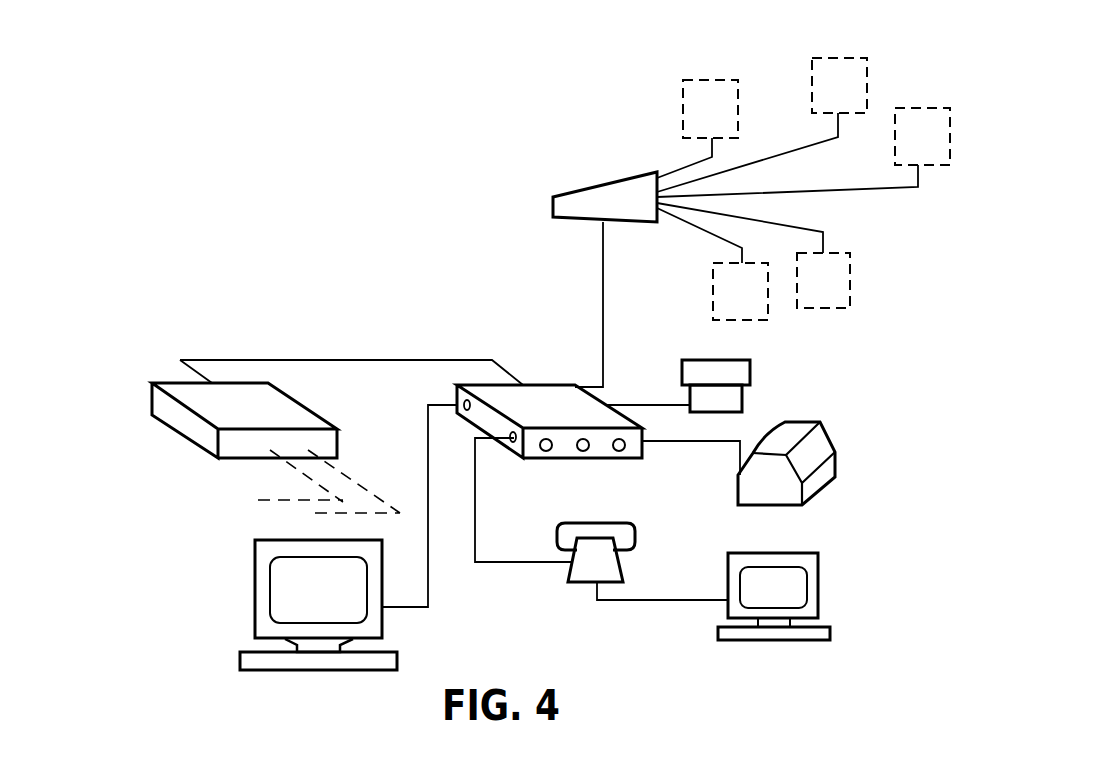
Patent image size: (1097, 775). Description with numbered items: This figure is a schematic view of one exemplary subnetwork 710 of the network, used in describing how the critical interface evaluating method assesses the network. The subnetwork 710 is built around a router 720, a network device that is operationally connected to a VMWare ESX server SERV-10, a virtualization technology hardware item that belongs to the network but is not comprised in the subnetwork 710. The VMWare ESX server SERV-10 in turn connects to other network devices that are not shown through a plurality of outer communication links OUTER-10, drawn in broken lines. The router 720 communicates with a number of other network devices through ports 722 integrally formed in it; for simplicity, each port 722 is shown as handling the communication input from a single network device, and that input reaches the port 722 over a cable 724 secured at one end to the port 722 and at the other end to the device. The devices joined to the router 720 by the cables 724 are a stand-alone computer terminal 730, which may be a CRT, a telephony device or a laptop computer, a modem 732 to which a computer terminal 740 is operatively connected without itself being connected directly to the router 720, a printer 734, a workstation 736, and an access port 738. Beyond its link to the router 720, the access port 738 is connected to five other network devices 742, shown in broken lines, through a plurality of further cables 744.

The subnetwork 710 is at (308, 160).
The router 720 is at (580, 396).
The ports 722 is at (583, 451).
The cable 724 is at (428, 563).
The stand-alone computer terminal 730 is at (292, 674).
The modem 732 is at (626, 565).
The printer 734 is at (755, 370).
The workstation 736 is at (830, 430).
The access port 738 is at (578, 184).
The computer terminal 740 is at (818, 580).
The other network devices 742 is at (673, 115).
The further cables 744 is at (810, 145).
The VMWare ESX server SERV-10 is at (178, 432).
The outer communication links OUTER-10 is at (295, 517).